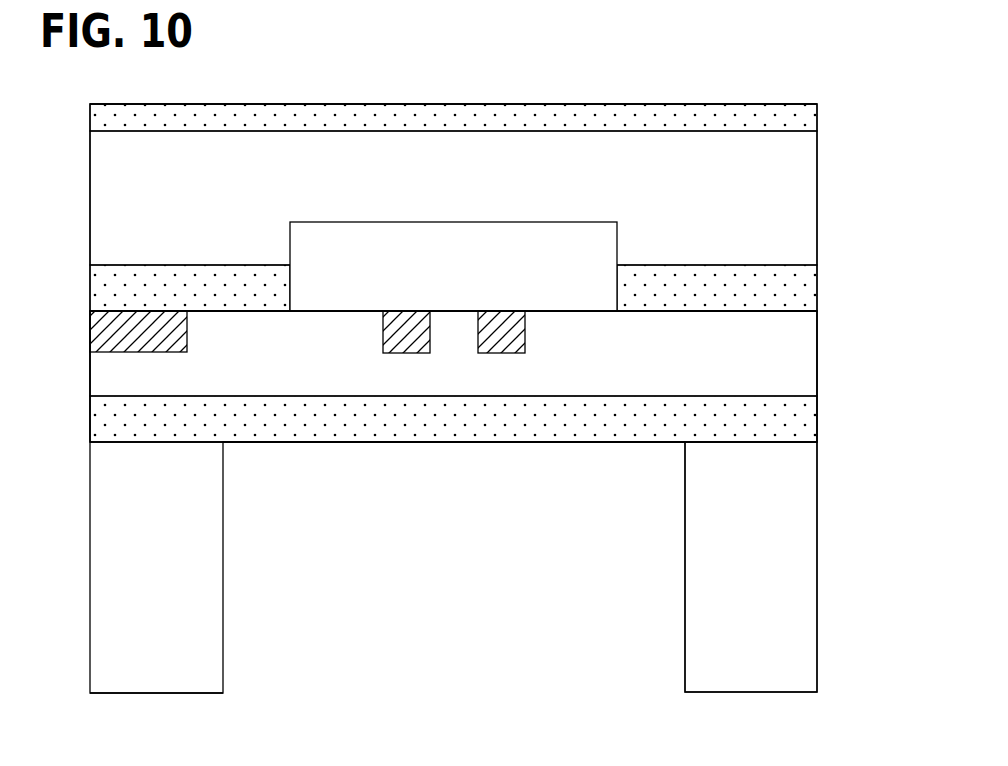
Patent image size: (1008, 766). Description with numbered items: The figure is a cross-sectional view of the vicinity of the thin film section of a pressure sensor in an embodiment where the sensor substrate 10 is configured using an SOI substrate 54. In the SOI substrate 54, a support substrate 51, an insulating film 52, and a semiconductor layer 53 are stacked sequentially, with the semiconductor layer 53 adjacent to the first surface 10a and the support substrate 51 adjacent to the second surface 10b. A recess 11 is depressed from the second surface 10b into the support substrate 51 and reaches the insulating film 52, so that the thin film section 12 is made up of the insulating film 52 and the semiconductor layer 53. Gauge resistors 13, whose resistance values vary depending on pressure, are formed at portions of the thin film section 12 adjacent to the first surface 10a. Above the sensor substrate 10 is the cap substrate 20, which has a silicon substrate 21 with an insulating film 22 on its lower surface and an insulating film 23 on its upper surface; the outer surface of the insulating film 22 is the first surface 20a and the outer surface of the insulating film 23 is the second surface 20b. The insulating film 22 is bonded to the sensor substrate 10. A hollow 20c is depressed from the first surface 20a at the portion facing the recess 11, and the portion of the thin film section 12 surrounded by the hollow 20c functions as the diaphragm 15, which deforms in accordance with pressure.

The sensor substrate 10 is at (78, 507).
The first surface 10a is at (153, 311).
The second surface 10b is at (143, 693).
The recess 11 is at (685, 626).
The thin film section 12 is at (359, 466).
The gauge resistors 13 is at (400, 328).
The diaphragm 15 is at (460, 378).
The cap substrate 20 is at (78, 167).
The first surface 20a is at (257, 311).
The second surface 20b is at (131, 104).
The hollow 20c is at (617, 245).
The silicon substrate 21 is at (797, 200).
The insulating film 22 is at (797, 285).
The insulating film 23 is at (797, 117).
The support substrate 51 is at (797, 468).
The insulating film 52 is at (797, 415).
The semiconductor layer 53 is at (797, 355).
The SOI substrate 54 is at (876, 340).